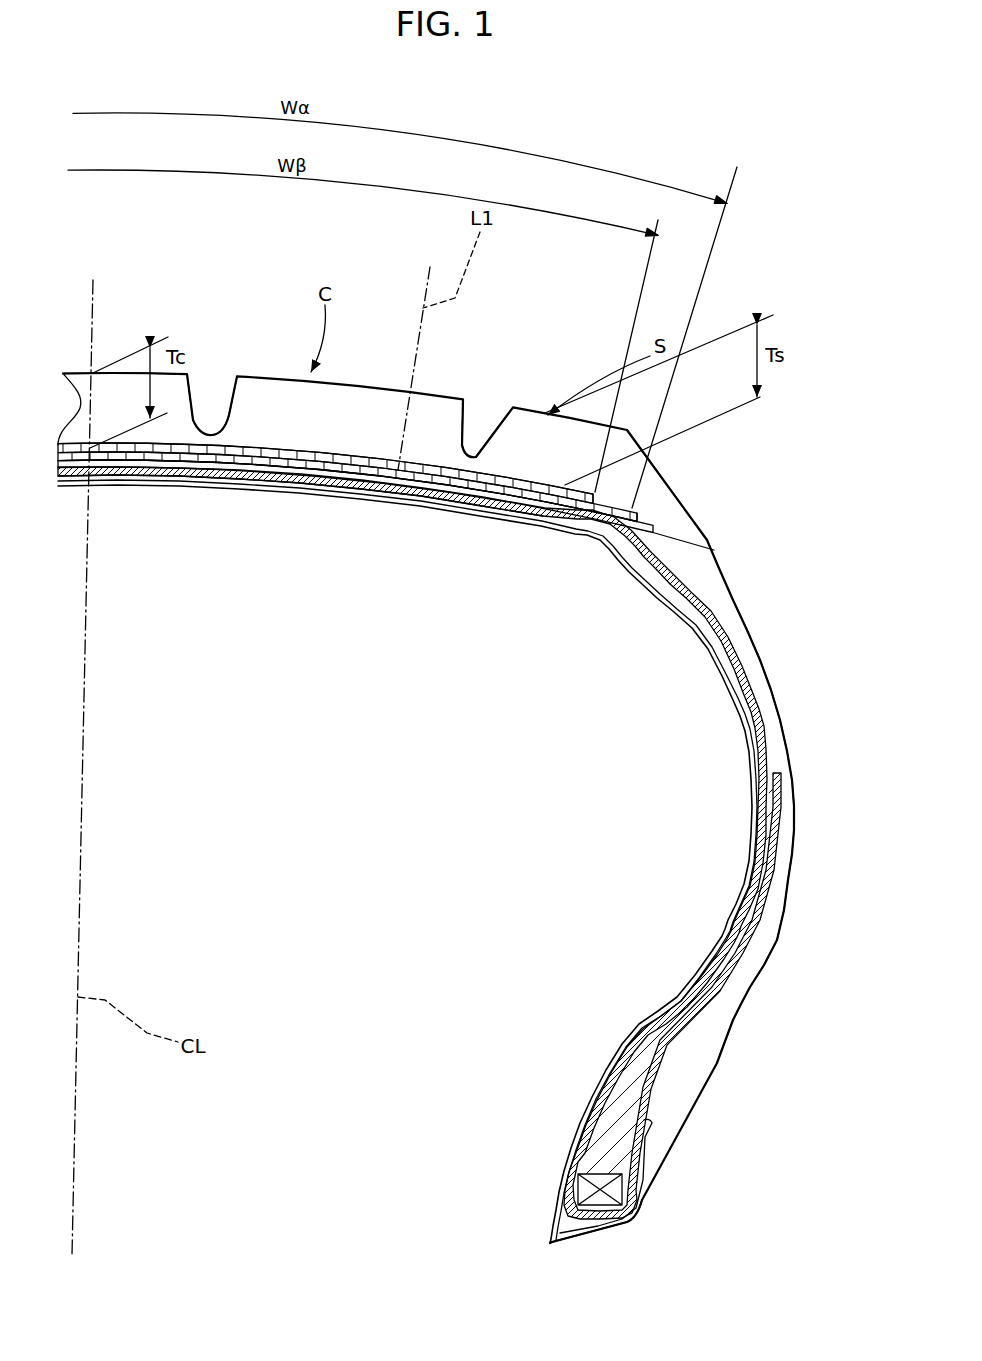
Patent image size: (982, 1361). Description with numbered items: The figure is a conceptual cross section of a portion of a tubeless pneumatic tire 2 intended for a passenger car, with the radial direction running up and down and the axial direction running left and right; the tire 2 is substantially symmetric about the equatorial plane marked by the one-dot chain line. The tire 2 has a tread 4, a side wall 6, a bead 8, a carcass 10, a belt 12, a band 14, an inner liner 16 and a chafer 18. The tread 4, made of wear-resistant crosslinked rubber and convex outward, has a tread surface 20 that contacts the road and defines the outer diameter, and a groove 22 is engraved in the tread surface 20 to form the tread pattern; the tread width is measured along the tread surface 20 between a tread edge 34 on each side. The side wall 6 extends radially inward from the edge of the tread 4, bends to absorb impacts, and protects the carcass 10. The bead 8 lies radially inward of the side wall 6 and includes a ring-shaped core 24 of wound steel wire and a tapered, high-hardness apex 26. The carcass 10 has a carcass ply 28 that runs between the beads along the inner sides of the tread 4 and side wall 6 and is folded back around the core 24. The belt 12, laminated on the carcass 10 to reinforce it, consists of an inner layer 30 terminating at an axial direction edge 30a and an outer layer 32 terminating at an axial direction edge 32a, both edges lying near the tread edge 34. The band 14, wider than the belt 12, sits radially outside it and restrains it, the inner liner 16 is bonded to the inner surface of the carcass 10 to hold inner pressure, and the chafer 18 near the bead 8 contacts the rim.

The tire 2 is at (740, 255).
The tread 4 is at (439, 384).
The side wall 6 is at (784, 785).
The bead 8 is at (808, 1098).
The carcass 10 is at (334, 493).
The belt 12 is at (547, 305).
The band 14 is at (459, 476).
The inner liner 16 is at (289, 493).
The chafer 18 is at (570, 1237).
The tread surface 20 is at (254, 372).
The groove 22 is at (226, 400).
The core 24 is at (617, 1188).
The apex 26 is at (633, 1078).
The carcass ply 28 is at (236, 489).
The inner layer 30 is at (606, 500).
The outer layer 32 is at (499, 481).
The axial direction edge 30a is at (650, 527).
The axial direction edge 32a is at (605, 500).
The tread edge 34 is at (629, 431).